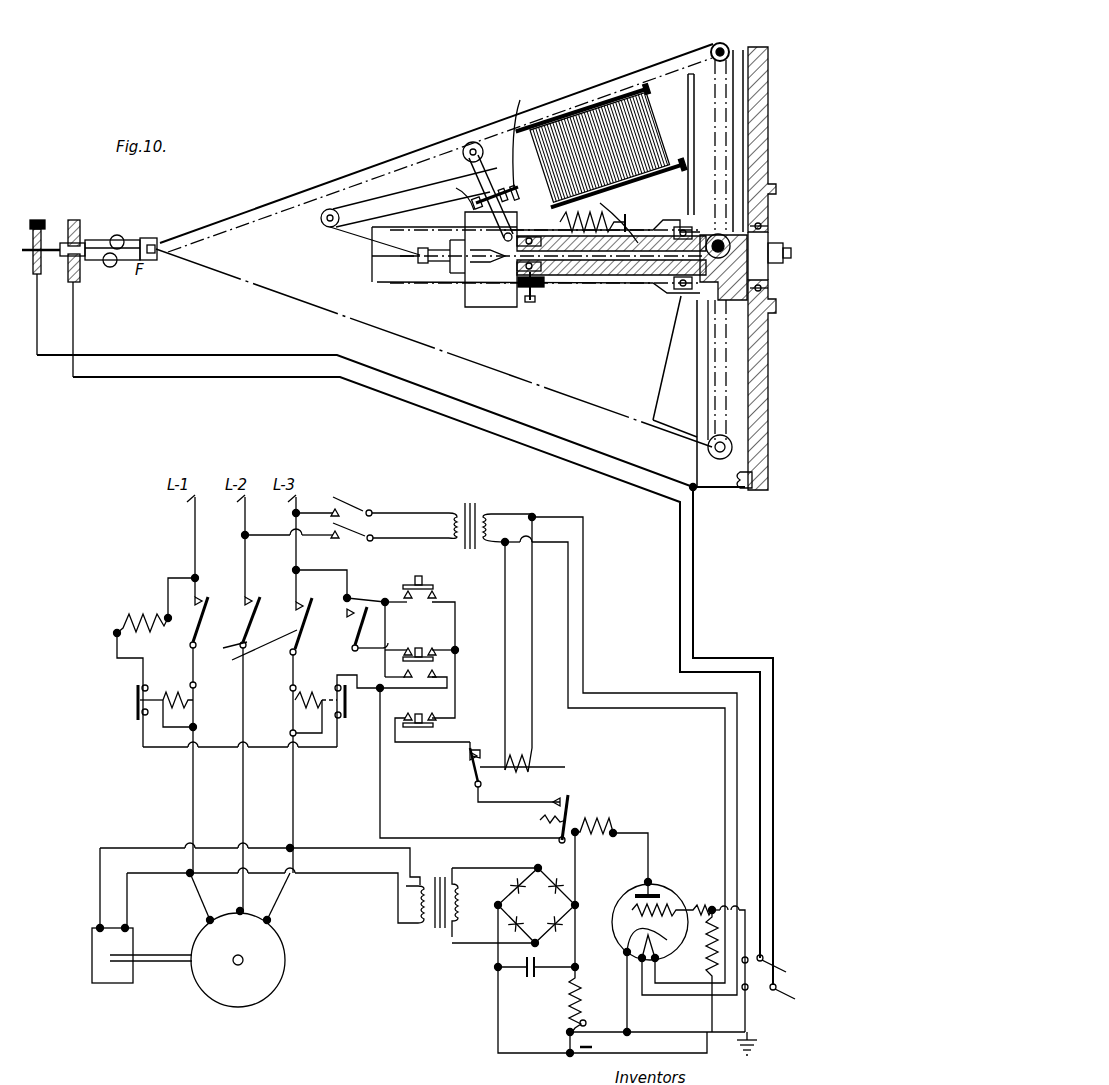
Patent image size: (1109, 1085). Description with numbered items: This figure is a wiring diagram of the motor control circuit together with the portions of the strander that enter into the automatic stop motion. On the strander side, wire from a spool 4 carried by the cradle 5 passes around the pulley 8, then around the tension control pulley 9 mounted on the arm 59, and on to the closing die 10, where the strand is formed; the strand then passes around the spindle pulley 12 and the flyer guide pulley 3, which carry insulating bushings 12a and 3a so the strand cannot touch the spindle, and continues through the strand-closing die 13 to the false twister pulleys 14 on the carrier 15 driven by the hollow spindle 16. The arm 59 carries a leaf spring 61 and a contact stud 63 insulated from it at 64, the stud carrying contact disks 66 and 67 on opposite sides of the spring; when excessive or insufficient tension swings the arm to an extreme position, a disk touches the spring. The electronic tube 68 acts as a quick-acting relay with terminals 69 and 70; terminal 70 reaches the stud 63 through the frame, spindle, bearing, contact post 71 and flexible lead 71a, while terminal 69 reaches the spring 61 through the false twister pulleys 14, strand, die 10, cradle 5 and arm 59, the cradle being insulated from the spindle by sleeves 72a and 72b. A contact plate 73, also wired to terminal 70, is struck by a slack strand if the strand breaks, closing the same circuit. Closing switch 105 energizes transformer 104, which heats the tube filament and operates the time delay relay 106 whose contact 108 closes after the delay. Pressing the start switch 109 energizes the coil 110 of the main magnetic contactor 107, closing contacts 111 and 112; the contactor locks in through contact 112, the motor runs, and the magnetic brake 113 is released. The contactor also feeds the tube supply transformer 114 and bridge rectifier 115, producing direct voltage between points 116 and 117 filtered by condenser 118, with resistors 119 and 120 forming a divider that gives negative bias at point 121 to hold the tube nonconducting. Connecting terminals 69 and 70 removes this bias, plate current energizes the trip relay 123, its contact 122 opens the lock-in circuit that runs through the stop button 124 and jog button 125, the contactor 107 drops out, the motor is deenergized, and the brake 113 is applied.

The guide pulley 3 is at (712, 50).
The insulating bushing 3a is at (730, 46).
The spool 4 is at (640, 118).
The cradle 5 is at (376, 283).
The pulley 8 is at (322, 225).
The tension control pulley 9 is at (473, 142).
The closing die 10 is at (418, 254).
The spindle pulley 12 is at (712, 246).
The insulating bushing 12a is at (712, 236).
The strand-closing die 13 is at (157, 242).
The false twister pulleys 14 is at (122, 238).
The carrier 15 is at (100, 240).
The spindle 16 is at (68, 256).
The arm 59 is at (482, 190).
The leaf spring 61 is at (497, 153).
The contact stud 63 is at (472, 203).
The insulation 64 is at (480, 200).
The contact disk 66 is at (517, 190).
The contact disk 67 is at (506, 190).
The quick-acting relay 68 is at (662, 892).
The terminal 69 is at (78, 282).
The terminal 70 is at (748, 492).
The contact post 71 is at (533, 300).
The flexible lead 71a is at (470, 309).
The insulating sleeve 72a is at (520, 290).
The insulating sleeve 72b is at (678, 290).
The contact plate 73 is at (40, 228).
The transformer 104 is at (478, 510).
The switch 105 is at (352, 508).
The time delay relay 106 is at (536, 758).
The main magnetic contactor 107 is at (217, 655).
The contact 108 is at (476, 748).
The start switch 109 is at (430, 582).
The coil 110 is at (128, 612).
The contacts 111 is at (251, 654).
The lock-up contact 112 is at (360, 598).
The magnetic brake 113 is at (90, 927).
The tube supply transformer 114 is at (430, 930).
The bridge rectifier 115 is at (545, 928).
The point 116 is at (500, 905).
The point 117 is at (578, 898).
The filter condenser 118 is at (525, 978).
The resistor 119 is at (580, 1000).
The resistor 120 is at (570, 1048).
The point 121 is at (567, 1055).
The contact 122 is at (570, 800).
The trip relay 123 is at (600, 818).
The stop button 124 is at (410, 727).
The jog button 125 is at (433, 662).